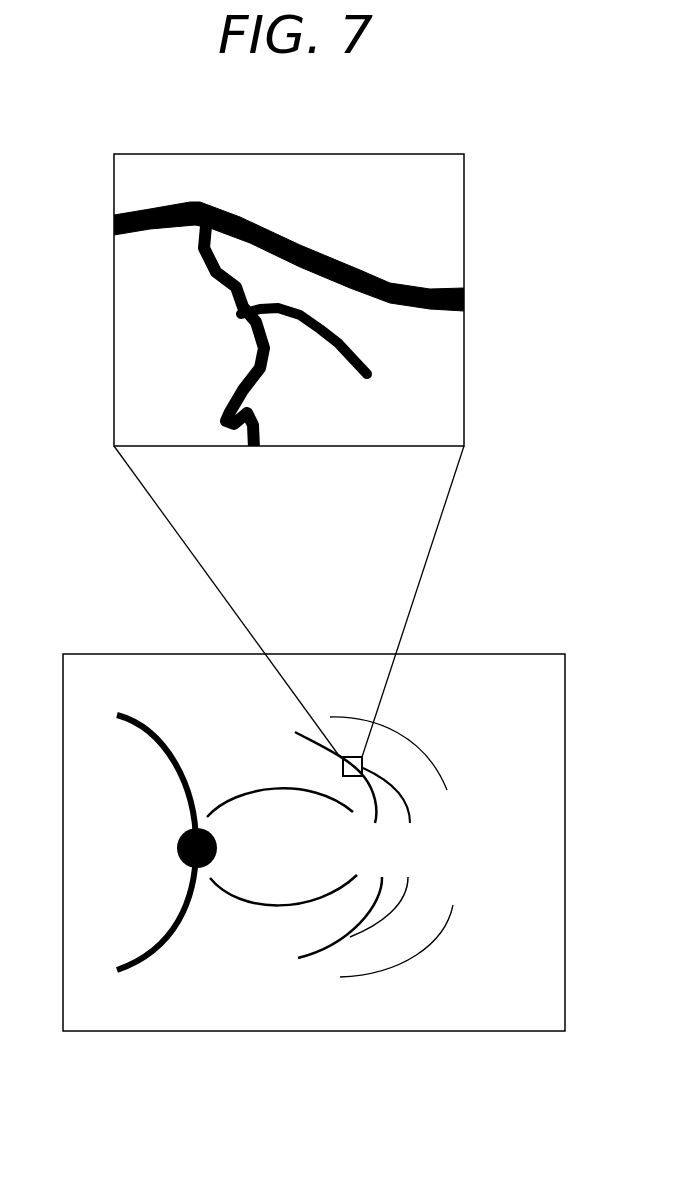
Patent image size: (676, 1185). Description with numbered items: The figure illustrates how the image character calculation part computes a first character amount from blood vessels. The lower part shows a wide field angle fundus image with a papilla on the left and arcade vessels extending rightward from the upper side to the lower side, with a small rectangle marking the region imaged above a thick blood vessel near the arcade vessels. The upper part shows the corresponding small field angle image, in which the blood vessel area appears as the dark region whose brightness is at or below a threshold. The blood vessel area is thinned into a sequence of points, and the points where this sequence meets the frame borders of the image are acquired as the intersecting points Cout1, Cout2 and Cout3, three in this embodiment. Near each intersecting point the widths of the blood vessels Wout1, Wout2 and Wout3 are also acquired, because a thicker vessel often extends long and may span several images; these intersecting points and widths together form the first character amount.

The blood vessel width near first intersecting point Wout1 is at (126, 212).
The first intersecting point Cout1 is at (138, 273).
The blood vessel width near second intersecting point Wout2 is at (322, 362).
The second intersecting point Cout2 is at (292, 430).
The blood vessel width near third intersecting point Wout3 is at (446, 285).
The third intersecting point Cout3 is at (430, 335).